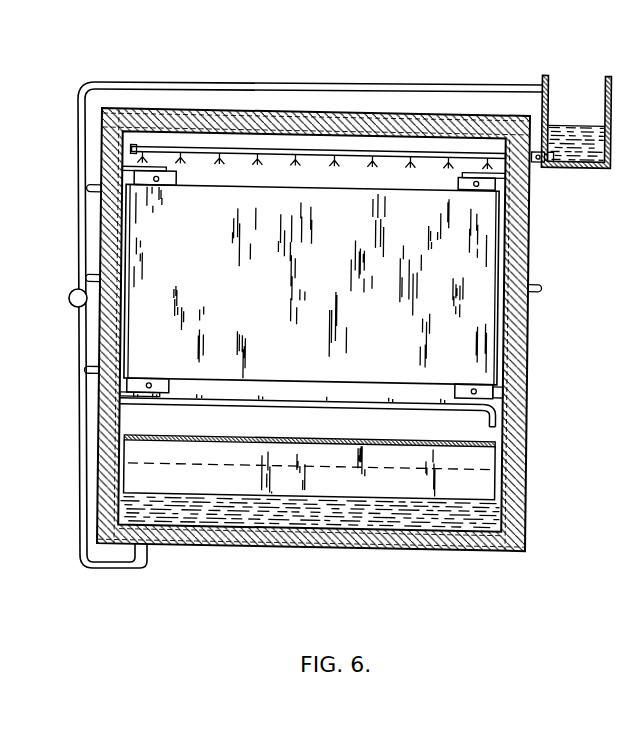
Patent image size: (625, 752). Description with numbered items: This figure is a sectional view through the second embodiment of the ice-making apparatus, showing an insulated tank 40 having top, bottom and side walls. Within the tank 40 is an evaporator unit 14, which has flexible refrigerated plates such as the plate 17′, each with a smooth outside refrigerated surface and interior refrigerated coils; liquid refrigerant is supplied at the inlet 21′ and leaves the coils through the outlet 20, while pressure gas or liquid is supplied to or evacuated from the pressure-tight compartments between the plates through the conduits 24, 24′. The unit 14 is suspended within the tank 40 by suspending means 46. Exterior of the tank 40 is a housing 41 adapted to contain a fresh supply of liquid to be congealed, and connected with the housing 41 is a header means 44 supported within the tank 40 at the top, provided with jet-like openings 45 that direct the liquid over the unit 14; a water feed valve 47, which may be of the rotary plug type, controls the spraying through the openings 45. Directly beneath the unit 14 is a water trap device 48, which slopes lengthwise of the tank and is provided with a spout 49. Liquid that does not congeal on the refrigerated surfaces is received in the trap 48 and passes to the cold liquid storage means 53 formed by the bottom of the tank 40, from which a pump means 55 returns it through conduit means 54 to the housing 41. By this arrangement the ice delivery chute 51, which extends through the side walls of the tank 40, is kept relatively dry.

The evaporator unit 14 is at (501, 340).
The flexible refrigerated plate 17′ is at (489, 230).
The refrigerant outlet 20 is at (89, 191).
The refrigerant inlet 21′ is at (91, 372).
The conduit 24 is at (90, 279).
The conduit 24′ is at (556, 290).
The insulated tank 40 is at (250, 107).
The housing 41 is at (560, 66).
The header means 44 is at (249, 151).
The jet-like openings 45 is at (334, 154).
The suspending means 46 is at (134, 177).
The water feed valve 47 is at (537, 156).
The water trap device 48 is at (211, 401).
The spout 49 is at (495, 412).
The ice delivery chute 51 is at (298, 447).
The cold liquid storage means 53 is at (415, 515).
The conduit means 54 is at (78, 517).
The pump means 55 is at (69, 300).